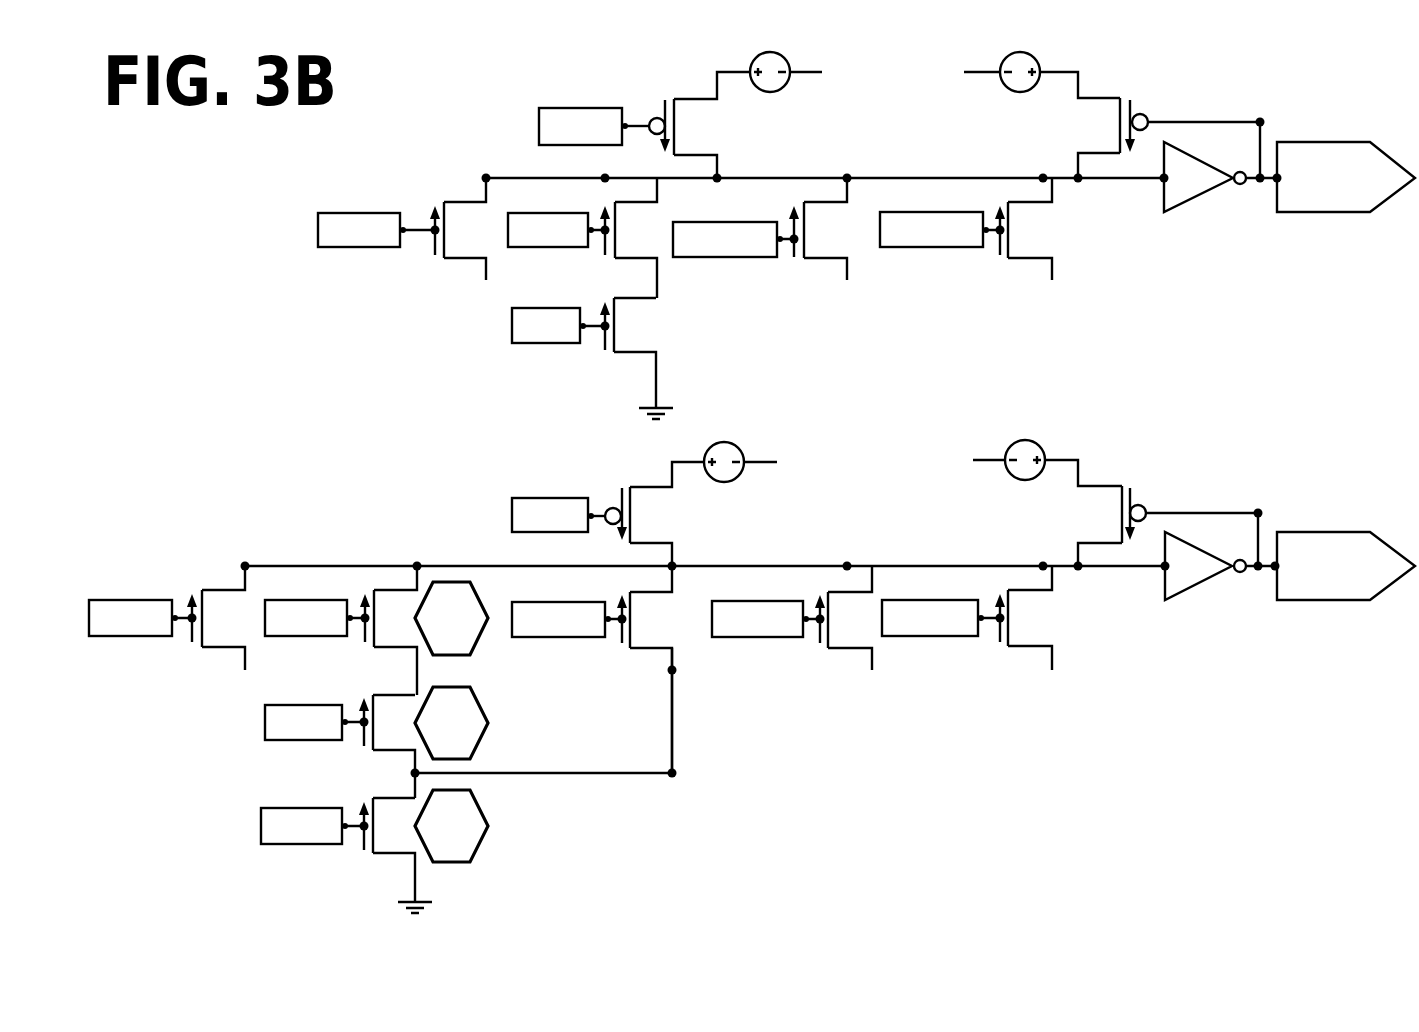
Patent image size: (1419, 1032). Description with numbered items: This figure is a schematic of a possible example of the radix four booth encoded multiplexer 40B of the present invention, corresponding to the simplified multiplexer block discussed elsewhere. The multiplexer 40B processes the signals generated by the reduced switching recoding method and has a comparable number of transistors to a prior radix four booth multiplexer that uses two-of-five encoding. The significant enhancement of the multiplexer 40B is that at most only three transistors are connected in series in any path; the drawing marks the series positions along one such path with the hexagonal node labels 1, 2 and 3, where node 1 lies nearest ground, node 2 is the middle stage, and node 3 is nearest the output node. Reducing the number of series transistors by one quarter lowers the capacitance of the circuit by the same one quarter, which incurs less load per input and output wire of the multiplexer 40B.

The radix 4 booth encoded multiplexer 40B is at (487, 128).
The node 1 is at (451, 826).
The node 2 is at (451, 723).
The node 3 is at (451, 618).